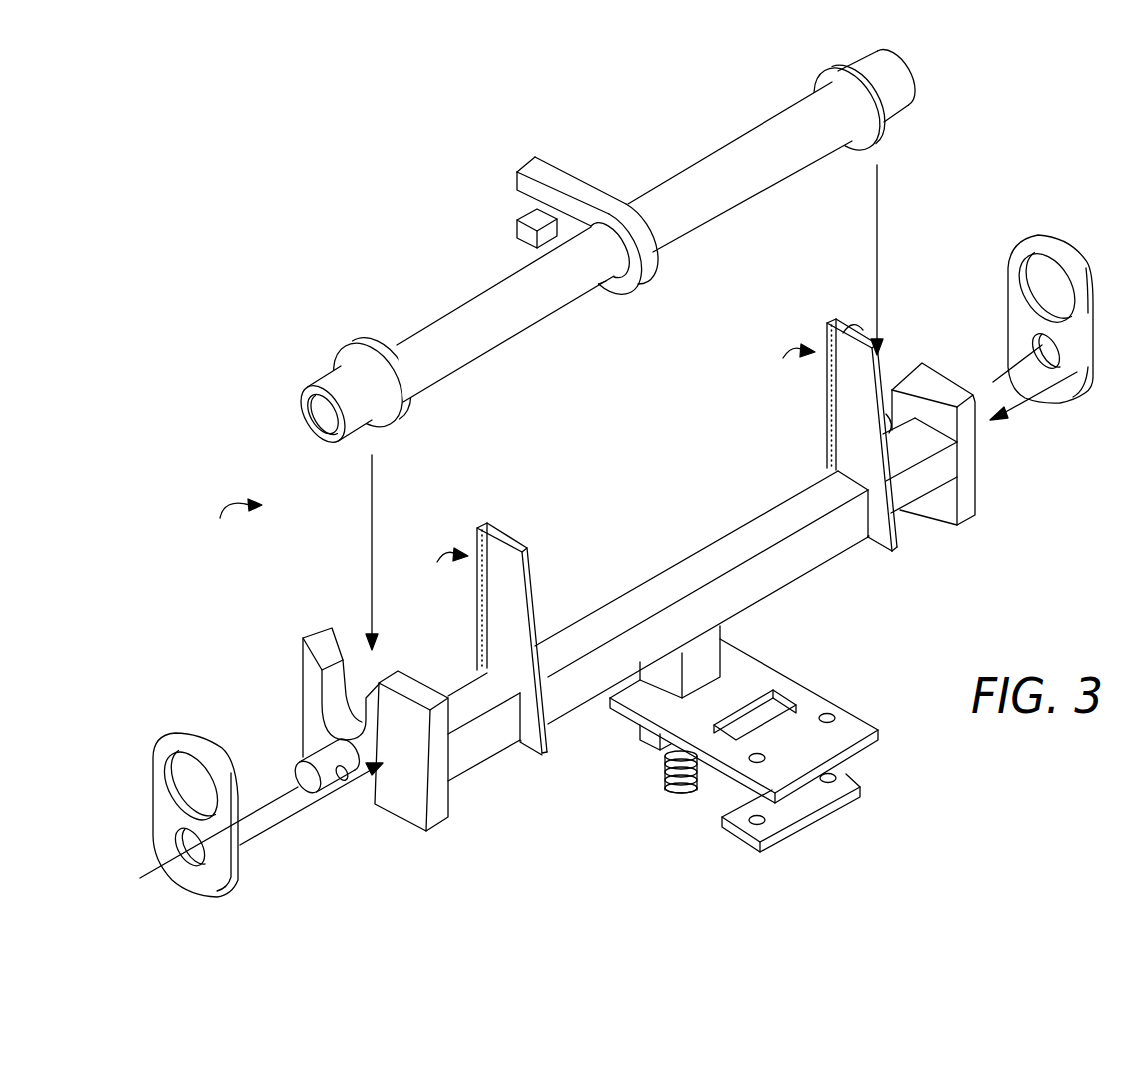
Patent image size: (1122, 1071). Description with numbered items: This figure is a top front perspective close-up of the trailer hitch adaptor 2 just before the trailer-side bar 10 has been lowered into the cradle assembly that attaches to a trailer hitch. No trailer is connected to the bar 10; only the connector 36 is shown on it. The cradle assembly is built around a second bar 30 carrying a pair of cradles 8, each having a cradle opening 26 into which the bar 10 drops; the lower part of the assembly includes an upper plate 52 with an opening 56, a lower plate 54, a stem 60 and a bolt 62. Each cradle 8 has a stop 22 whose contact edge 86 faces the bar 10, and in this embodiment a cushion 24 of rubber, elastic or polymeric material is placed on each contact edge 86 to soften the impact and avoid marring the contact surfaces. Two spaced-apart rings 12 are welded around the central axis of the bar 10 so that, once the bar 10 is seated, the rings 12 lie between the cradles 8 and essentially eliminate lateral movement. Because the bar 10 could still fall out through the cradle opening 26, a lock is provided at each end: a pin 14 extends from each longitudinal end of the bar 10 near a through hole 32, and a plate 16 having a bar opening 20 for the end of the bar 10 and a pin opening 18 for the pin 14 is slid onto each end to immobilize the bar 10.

The trailer hitch adaptor 2 is at (235, 524).
The cradle 8 is at (410, 797).
The bar 10 is at (470, 298).
The ring 12 is at (848, 70).
The pin 14 is at (297, 770).
The plate 16 is at (205, 883).
The pin opening 18 is at (178, 838).
The bar opening 20 is at (187, 780).
The stop 22 is at (527, 717).
The cushion 24 is at (477, 618).
The cradle opening 26 is at (350, 643).
The bar 30 is at (793, 563).
The through hole 32 is at (340, 765).
The connector 36 is at (568, 192).
The upper plate 52 is at (848, 723).
The lower plate 54 is at (817, 817).
The opening 56 is at (780, 700).
The stem 60 is at (707, 660).
The bolt 62 is at (665, 783).
The contact edge 86 is at (616, 469).